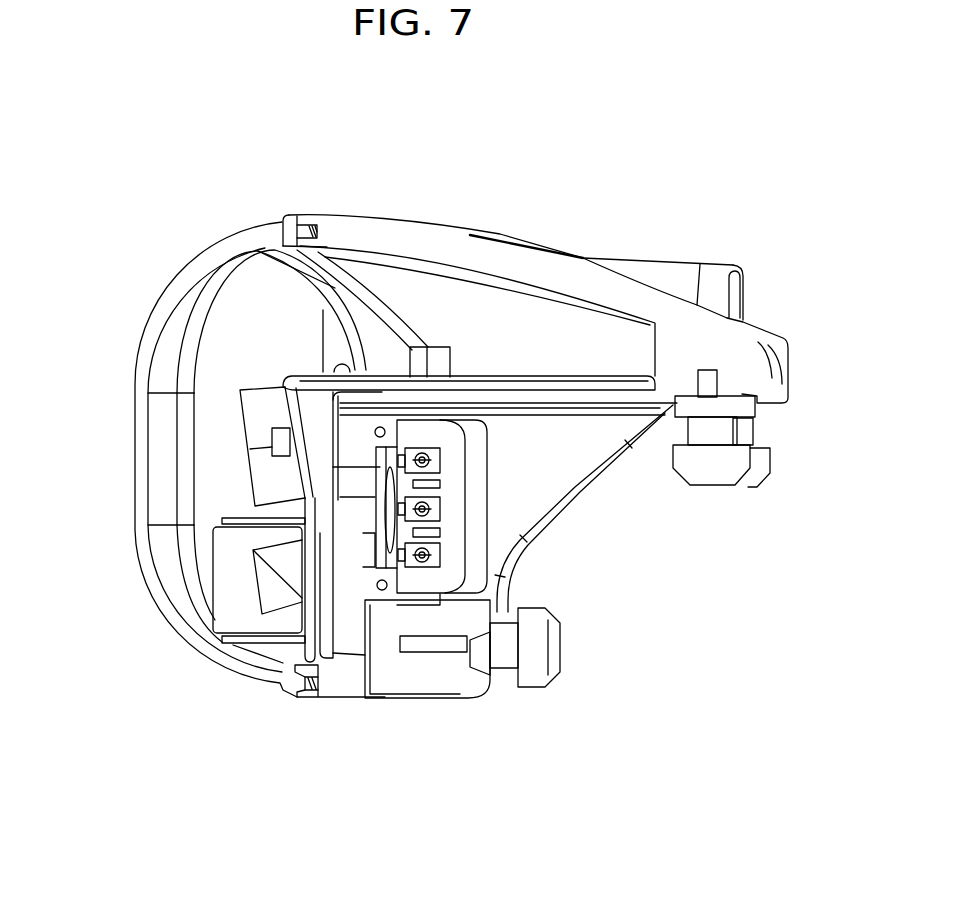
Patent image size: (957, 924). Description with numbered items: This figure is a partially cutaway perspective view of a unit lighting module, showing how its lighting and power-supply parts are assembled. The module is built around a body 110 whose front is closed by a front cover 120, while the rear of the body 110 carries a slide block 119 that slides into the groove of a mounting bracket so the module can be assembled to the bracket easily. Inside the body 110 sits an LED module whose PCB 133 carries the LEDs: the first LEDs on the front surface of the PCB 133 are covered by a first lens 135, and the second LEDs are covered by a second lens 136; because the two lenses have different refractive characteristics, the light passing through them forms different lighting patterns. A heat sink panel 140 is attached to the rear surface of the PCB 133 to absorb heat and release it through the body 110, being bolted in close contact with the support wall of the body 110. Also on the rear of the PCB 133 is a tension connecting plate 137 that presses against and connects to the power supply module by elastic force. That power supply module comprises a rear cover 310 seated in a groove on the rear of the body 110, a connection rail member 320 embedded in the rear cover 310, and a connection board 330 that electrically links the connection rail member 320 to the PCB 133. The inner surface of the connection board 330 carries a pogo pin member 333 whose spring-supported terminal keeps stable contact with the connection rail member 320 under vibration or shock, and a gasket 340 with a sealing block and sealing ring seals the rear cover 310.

The body 110 is at (425, 250).
The slide block 119 is at (703, 460).
The front cover 120 is at (137, 548).
The PCB 133 is at (253, 630).
The first lens 135 is at (223, 593).
The second lens 136 is at (257, 422).
The tension connecting plate 137 is at (232, 277).
The heat sink panel 140 is at (323, 608).
The rear cover 310 is at (457, 488).
The connection rail member 320 is at (440, 547).
The connection board 330 is at (381, 447).
The pogo pin member 333 is at (432, 450).
The gasket 340 is at (378, 592).